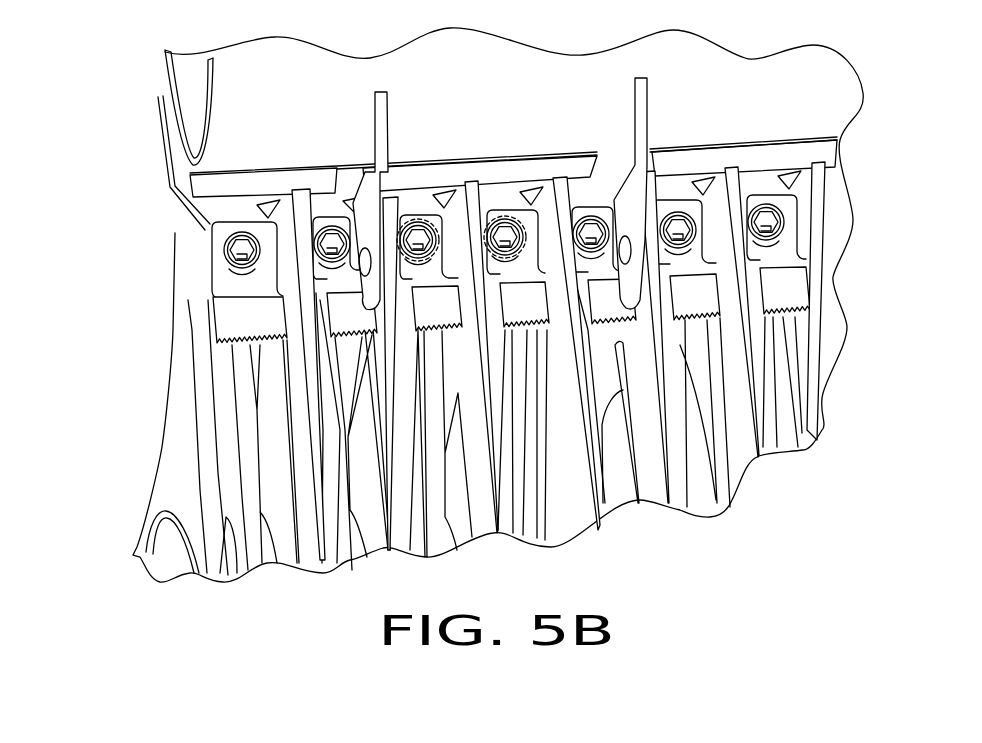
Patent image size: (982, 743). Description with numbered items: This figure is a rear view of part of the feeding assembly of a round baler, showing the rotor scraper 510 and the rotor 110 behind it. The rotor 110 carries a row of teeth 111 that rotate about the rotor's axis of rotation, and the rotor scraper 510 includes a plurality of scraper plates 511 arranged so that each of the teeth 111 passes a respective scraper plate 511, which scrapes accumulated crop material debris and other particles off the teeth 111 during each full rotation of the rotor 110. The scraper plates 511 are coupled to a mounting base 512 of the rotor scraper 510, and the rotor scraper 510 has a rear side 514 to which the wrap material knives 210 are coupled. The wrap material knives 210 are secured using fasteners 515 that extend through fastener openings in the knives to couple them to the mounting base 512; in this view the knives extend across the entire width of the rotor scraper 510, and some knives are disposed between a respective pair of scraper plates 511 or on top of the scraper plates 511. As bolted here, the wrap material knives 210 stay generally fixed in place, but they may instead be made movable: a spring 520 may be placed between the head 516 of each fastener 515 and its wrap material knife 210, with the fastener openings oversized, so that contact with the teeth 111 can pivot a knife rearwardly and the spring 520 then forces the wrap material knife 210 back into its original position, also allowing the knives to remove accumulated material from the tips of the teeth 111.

The rotor 110 is at (163, 547).
The teeth 111 is at (213, 433).
The wrap material knives 210 is at (357, 312).
The rotor scraper 510 is at (157, 218).
The scraper plates 511 is at (392, 332).
The mounting base 512 is at (183, 190).
The rear side 514 is at (709, 168).
The fasteners 515 is at (507, 242).
The head 516 is at (425, 245).
The spring 520 is at (503, 222).